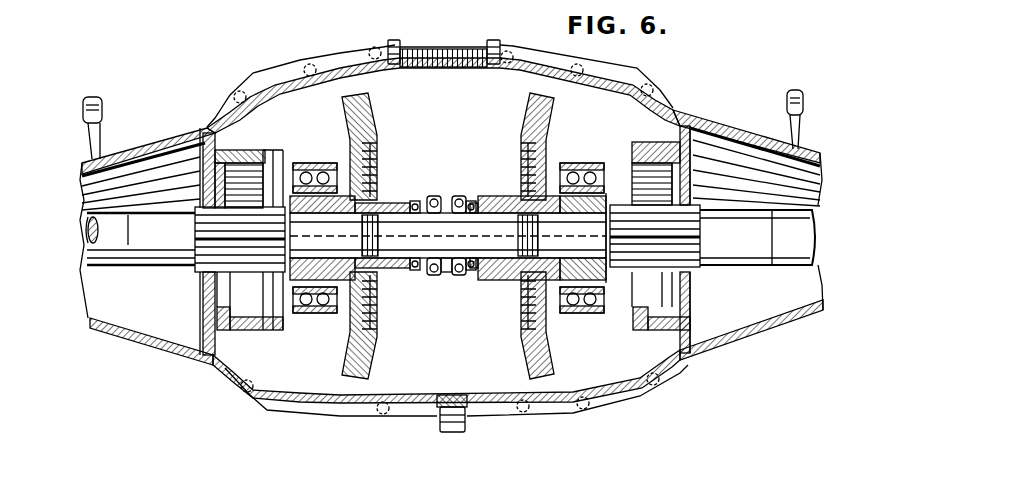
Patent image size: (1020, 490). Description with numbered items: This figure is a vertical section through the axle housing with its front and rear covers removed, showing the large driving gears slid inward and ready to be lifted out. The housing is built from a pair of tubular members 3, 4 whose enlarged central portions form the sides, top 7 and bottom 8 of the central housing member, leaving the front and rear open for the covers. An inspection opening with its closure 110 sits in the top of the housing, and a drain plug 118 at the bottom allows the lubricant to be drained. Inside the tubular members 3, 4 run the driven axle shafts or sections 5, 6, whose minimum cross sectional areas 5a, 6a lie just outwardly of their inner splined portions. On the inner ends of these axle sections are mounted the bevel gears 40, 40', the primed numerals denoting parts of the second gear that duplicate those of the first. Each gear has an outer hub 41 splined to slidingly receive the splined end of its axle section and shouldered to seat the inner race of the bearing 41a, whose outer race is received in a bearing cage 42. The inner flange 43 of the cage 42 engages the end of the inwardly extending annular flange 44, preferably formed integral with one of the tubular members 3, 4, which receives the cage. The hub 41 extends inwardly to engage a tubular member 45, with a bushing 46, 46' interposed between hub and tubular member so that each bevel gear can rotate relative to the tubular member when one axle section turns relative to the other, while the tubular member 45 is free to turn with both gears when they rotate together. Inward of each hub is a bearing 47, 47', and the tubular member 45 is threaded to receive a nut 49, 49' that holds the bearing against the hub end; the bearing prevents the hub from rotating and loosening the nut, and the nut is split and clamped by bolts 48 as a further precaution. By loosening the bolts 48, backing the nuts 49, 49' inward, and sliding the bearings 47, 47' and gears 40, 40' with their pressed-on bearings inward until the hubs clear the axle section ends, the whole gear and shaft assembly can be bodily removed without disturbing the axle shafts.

The tubular member 3 is at (128, 338).
The tubular member 4 is at (757, 335).
The driven axle shaft 5 is at (185, 253).
The minimum cross sectional area 5a is at (223, 239).
The driven axle shaft 6 is at (793, 237).
The minimum cross sectional area 6a is at (691, 236).
The top of housing member 7 is at (528, 72).
The bottom of housing member 8 is at (485, 395).
The bevel gear 40 is at (523, 236).
The bevel gear 40' is at (371, 236).
The hub 41 is at (605, 200).
The bearing 41a is at (578, 162).
The bearing cage 42 is at (638, 310).
The inner flange 43 is at (645, 142).
The annular flange 44 is at (672, 297).
The tubular member 45 is at (448, 235).
The bushing 46 is at (515, 253).
The bushing 46' is at (350, 253).
The bearing 47 is at (476, 216).
The bearing 47' is at (410, 221).
The clamping bolts 48 is at (440, 274).
The nut 49 is at (446, 257).
The nut 49' is at (439, 190).
The inspection opening closure 110 is at (455, 47).
The drain plug 118 is at (466, 428).